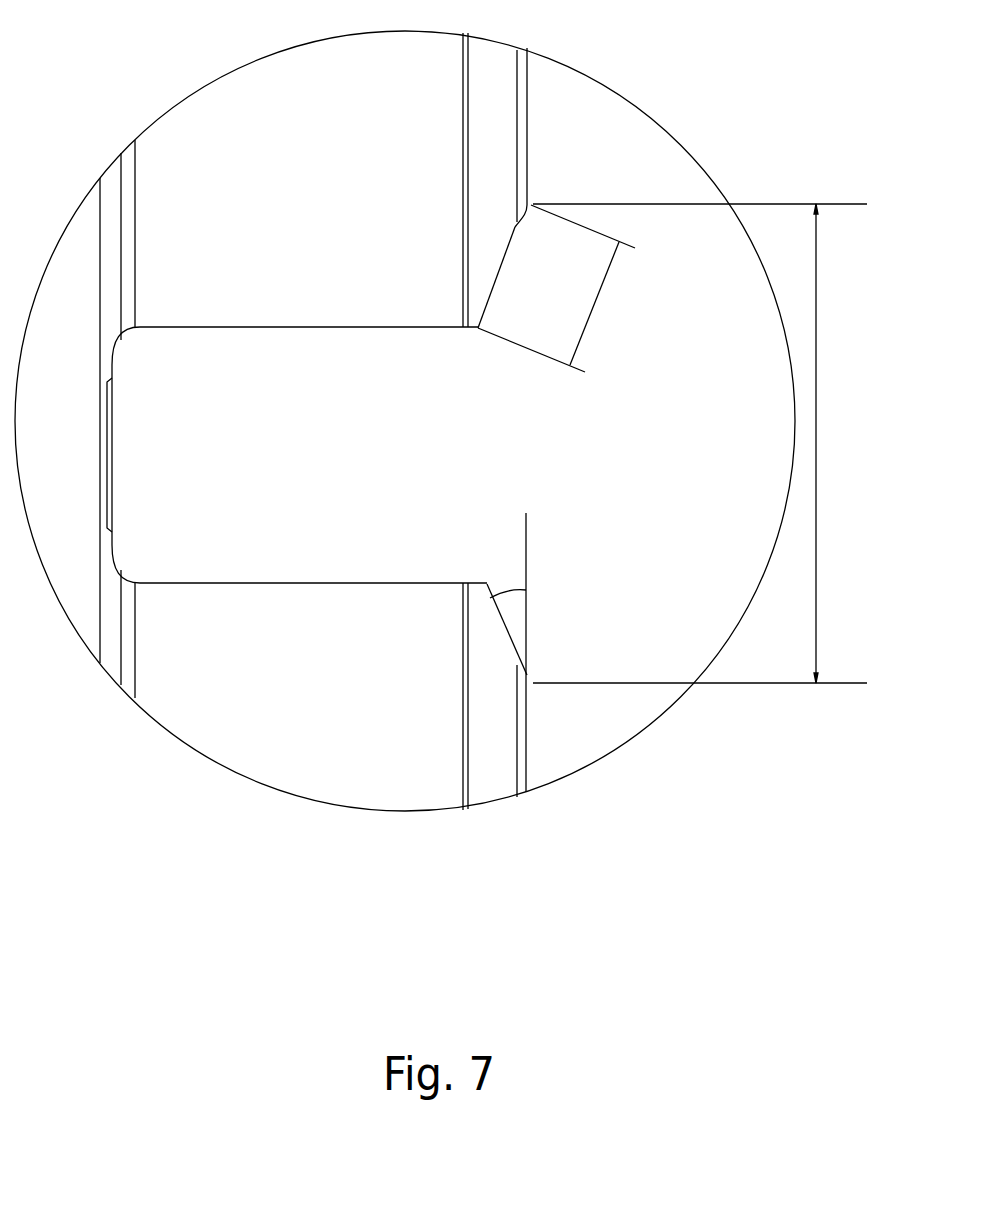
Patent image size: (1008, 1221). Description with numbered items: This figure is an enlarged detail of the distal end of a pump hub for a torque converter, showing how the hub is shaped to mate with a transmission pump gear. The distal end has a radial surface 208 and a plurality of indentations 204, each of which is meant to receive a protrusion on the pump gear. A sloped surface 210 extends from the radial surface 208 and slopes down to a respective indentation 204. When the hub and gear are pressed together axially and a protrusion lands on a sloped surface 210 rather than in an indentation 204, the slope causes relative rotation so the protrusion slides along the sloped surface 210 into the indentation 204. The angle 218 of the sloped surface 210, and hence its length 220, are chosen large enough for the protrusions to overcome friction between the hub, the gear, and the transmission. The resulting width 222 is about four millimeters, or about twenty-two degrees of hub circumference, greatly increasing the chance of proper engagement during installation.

The indentation 204 is at (373, 487).
The radial surface 208 is at (527, 125).
The sloped surface 210 is at (513, 238).
The angle 218 is at (507, 590).
The length 220 is at (595, 303).
The width 222 is at (816, 441).